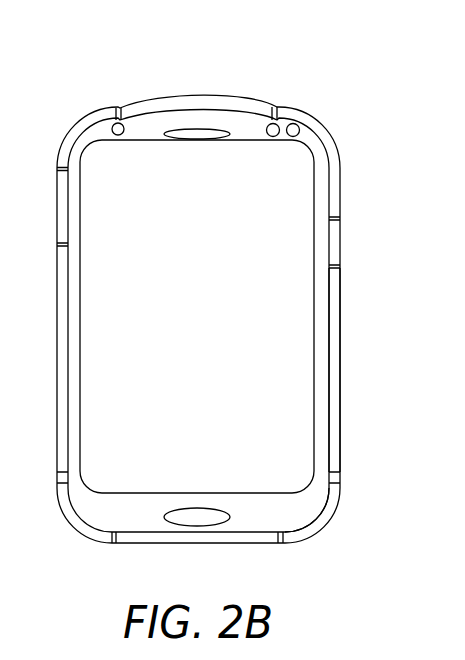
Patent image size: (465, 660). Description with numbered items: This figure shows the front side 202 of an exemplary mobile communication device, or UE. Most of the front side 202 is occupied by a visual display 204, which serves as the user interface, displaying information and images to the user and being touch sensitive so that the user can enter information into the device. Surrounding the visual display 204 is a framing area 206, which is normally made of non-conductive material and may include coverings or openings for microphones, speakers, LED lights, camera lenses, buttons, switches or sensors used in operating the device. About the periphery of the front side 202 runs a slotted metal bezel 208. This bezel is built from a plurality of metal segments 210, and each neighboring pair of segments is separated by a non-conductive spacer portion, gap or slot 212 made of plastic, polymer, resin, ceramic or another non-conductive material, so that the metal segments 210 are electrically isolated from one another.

The front side 202 is at (70, 78).
The visual display 204 is at (280, 222).
The framing area 206 is at (300, 512).
The slotted metal bezel 208 is at (333, 393).
The metal segments 210 is at (82, 124).
The non-conductive spacer portion, gap or slot 212 is at (117, 107).